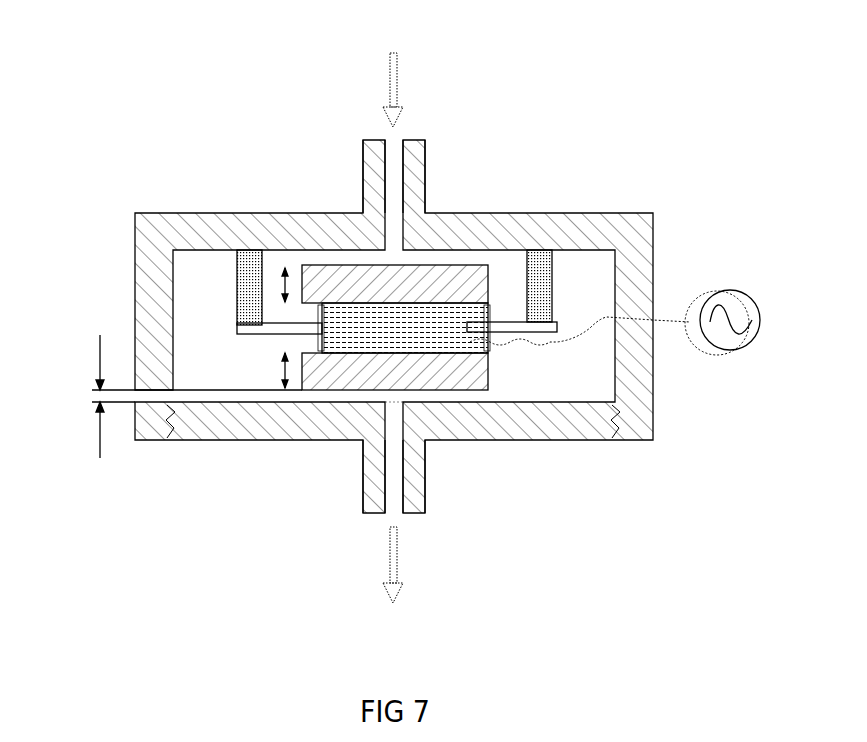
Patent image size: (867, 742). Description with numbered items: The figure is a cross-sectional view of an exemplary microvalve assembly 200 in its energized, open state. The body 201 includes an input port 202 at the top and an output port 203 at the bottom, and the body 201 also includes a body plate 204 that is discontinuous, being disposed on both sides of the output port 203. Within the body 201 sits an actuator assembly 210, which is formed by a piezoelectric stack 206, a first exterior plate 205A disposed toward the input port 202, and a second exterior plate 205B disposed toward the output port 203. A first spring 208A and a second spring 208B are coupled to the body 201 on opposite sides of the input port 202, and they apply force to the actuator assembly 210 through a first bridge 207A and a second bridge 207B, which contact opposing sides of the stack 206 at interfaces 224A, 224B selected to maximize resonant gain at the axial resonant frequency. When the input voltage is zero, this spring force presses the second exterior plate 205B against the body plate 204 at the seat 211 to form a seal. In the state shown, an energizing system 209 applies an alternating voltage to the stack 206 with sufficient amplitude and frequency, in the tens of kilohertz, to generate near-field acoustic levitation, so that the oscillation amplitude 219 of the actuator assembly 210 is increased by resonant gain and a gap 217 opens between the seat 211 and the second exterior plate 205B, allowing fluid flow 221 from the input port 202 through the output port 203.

The microvalve assembly 200 is at (565, 93).
The body 201 is at (527, 238).
The input port 202 is at (383, 180).
The output port 203 is at (383, 483).
The body plate 204 is at (217, 425).
The first exterior plate 205A is at (372, 285).
The second exterior plate 205B is at (433, 410).
The stack 206 is at (457, 328).
The first bridge 207A is at (238, 326).
The second bridge 207B is at (513, 325).
The first spring 208A is at (245, 273).
The second spring 208B is at (543, 290).
The energizing system 209 is at (717, 350).
The actuator assembly 210 is at (466, 452).
The seat 211 is at (383, 402).
The gap 217 is at (191, 415).
The oscillation amplitude 219 is at (285, 280).
The fluid flow 221 is at (390, 333).
The first interface 224A is at (315, 325).
The second interface 224B is at (468, 325).